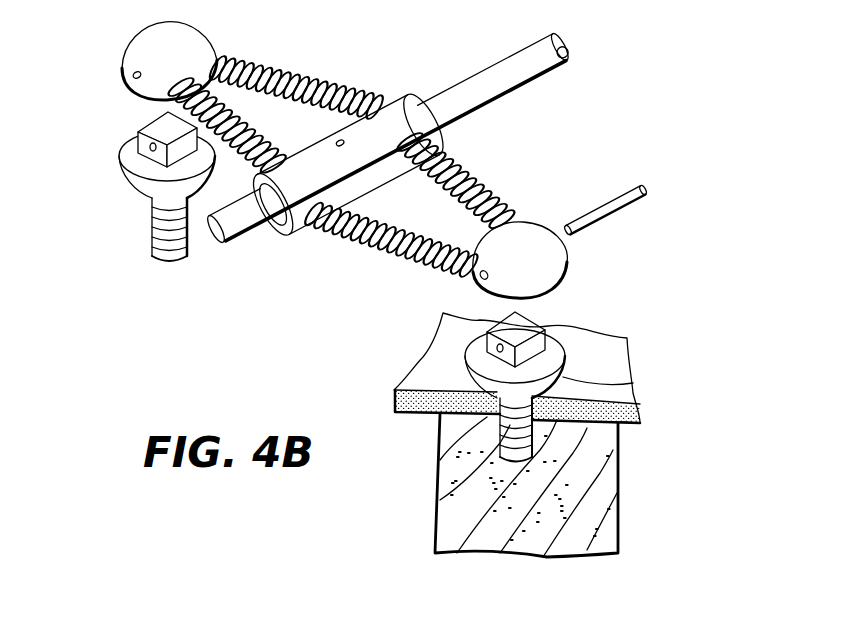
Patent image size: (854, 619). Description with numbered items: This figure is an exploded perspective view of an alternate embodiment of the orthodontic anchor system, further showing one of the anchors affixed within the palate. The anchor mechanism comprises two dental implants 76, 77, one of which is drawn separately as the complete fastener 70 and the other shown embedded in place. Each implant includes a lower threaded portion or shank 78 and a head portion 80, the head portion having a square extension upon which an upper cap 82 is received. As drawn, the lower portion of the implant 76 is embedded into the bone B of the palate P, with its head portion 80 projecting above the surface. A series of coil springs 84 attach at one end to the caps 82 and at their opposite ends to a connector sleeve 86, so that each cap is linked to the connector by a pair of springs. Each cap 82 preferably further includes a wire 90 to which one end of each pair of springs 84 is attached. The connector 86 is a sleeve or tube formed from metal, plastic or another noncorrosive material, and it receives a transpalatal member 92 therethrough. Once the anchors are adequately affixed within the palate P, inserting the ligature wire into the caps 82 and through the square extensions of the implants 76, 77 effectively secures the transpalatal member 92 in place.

The fastener screw 70 is at (134, 217).
The dental implant 76 is at (633, 383).
The dental implant 77 is at (127, 170).
The lower threaded portion or shank 78 is at (148, 203).
The head portion 80 is at (142, 128).
The upper cap 82 is at (198, 26).
The springs 84 is at (307, 67).
The connector sleeve 86 is at (408, 100).
The wire 90 is at (615, 192).
The transpalatal member 92 is at (547, 78).
The palate P is at (608, 350).
The bone B is at (618, 476).